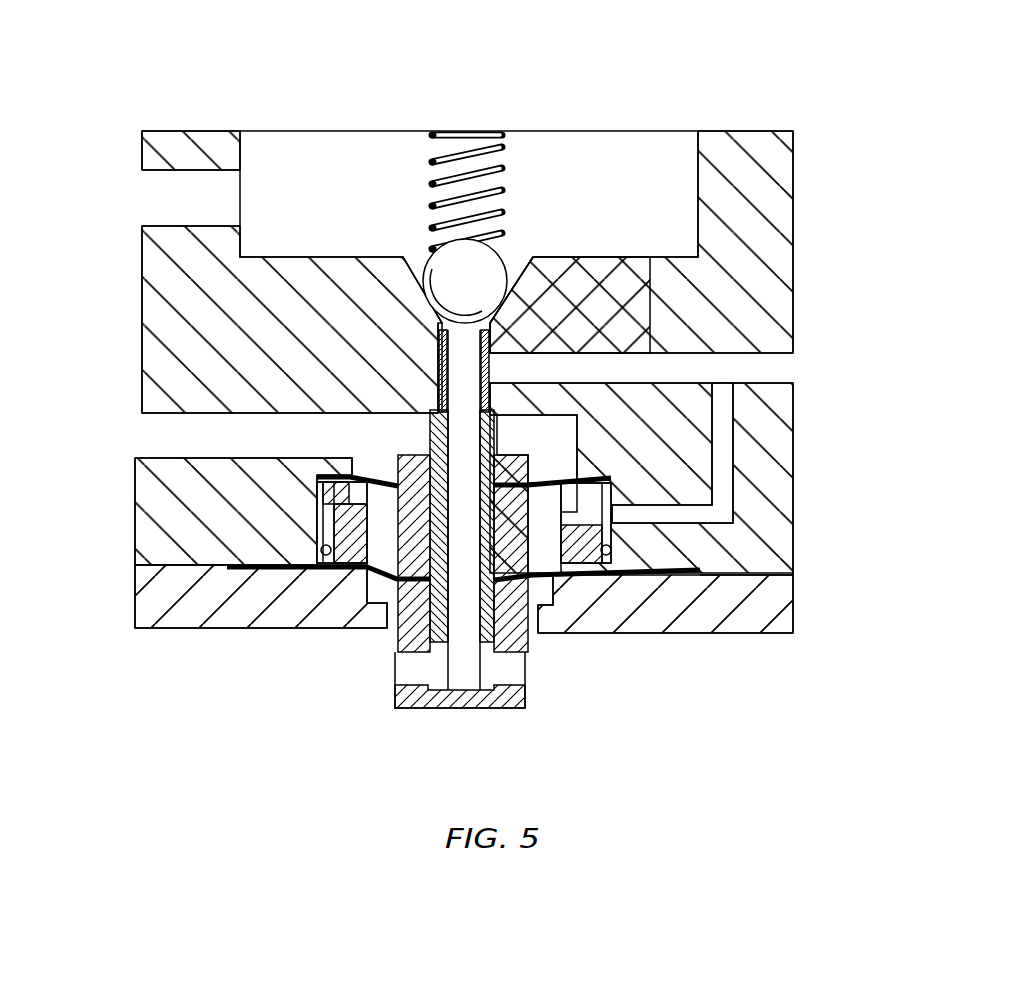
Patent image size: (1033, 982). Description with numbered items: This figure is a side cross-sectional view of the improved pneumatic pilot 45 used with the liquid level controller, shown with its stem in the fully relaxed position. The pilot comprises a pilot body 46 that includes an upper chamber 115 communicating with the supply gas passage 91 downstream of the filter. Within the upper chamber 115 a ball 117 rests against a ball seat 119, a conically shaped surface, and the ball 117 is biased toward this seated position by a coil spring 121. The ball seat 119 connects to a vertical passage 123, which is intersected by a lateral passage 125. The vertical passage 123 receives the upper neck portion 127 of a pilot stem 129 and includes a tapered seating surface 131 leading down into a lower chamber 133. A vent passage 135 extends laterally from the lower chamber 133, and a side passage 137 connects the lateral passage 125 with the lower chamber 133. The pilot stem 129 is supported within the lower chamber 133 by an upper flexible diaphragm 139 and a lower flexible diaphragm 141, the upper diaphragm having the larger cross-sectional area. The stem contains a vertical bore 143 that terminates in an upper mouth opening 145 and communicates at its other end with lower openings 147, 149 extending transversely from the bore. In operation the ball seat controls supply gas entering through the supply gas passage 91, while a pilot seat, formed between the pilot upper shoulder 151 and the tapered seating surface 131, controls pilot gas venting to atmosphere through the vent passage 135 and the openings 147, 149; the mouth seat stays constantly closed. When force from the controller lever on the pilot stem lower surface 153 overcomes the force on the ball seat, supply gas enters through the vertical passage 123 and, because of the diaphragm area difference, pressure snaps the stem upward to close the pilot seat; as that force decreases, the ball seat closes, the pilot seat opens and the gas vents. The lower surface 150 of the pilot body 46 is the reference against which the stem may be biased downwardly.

The pneumatic pilot 45 is at (826, 200).
The pilot body 46 is at (795, 500).
The supply gas passage 91 is at (172, 220).
The upper chamber 115 is at (505, 147).
The ball 117 is at (500, 258).
The ball seat 119 is at (522, 262).
The coil spring 121 is at (636, 135).
The vertical passage 123 is at (641, 368).
The lateral passage 125 is at (492, 352).
The upper neck portion 127 is at (500, 352).
The pilot stem 129 is at (735, 530).
The tapered seating surface 131 is at (530, 400).
The lower chamber 133 is at (572, 440).
The vent passage 135 is at (265, 432).
The side passage 137 is at (793, 568).
The upper flexible diaphragm 139 is at (377, 473).
The lower flexible diaphragm 141 is at (387, 585).
The vertical bore 143 is at (447, 635).
The upper mouth opening 145 is at (440, 322).
The lower opening 147 is at (510, 650).
The lower opening 149 is at (408, 678).
The lower surface of the pilot body 150 is at (632, 640).
The pilot upper shoulder 151 is at (430, 447).
The pilot stem lower surface 153 is at (465, 708).